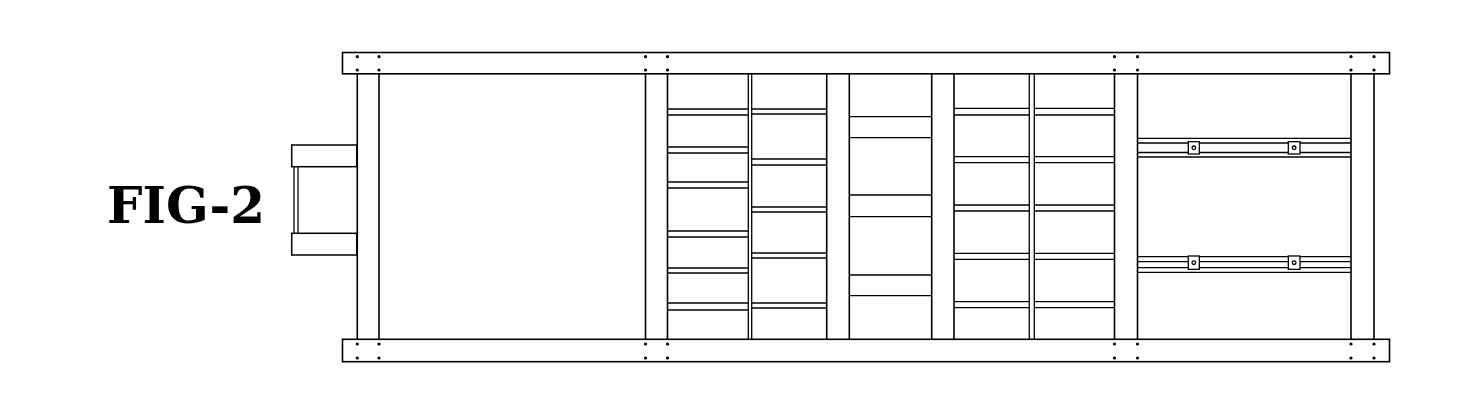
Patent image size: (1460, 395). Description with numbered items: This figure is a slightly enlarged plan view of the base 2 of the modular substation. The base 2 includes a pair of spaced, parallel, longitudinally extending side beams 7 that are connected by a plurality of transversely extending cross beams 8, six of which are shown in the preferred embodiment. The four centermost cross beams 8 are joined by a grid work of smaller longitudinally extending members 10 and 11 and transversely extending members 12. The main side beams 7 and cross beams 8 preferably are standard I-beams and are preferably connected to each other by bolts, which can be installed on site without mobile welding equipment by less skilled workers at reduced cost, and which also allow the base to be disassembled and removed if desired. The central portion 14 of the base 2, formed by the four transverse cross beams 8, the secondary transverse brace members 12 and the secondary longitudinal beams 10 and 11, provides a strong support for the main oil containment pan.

The base 2 is at (347, 115).
The side beam 7 is at (499, 66).
The cross beam 8 is at (365, 298).
The longitudinally extending member 10 is at (693, 145).
The longitudinally extending member 11 is at (893, 282).
The transversely extending member 12 is at (748, 92).
The central portion 14 is at (639, 169).